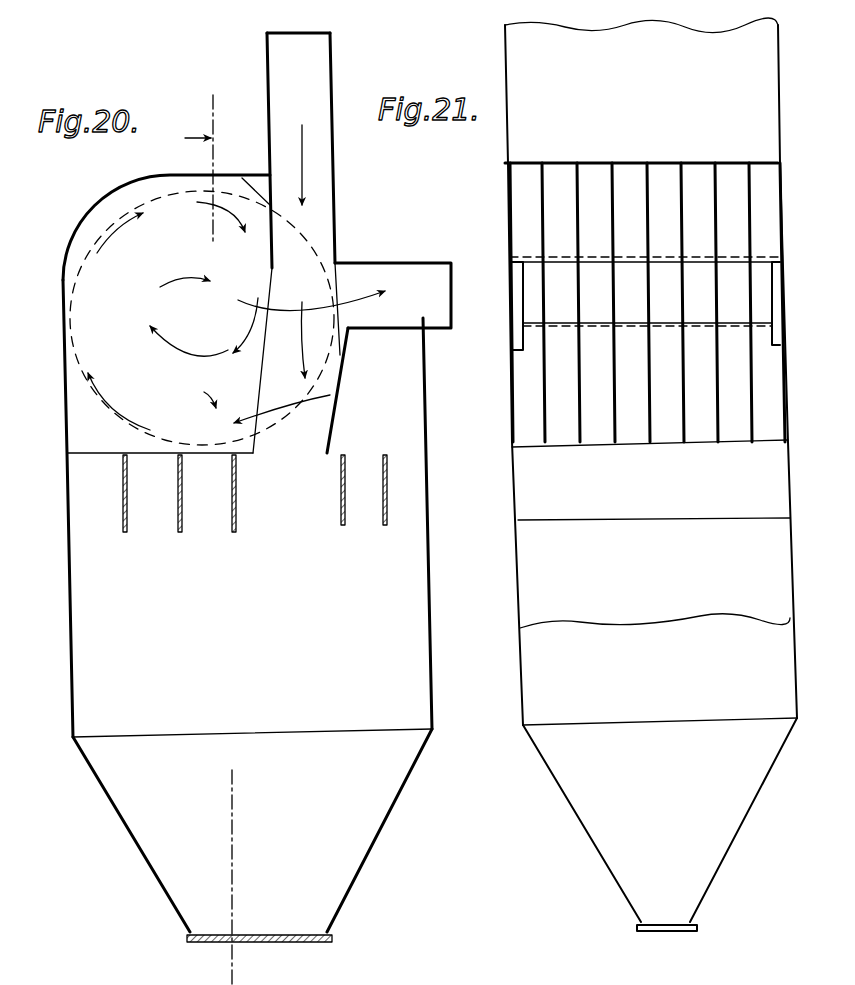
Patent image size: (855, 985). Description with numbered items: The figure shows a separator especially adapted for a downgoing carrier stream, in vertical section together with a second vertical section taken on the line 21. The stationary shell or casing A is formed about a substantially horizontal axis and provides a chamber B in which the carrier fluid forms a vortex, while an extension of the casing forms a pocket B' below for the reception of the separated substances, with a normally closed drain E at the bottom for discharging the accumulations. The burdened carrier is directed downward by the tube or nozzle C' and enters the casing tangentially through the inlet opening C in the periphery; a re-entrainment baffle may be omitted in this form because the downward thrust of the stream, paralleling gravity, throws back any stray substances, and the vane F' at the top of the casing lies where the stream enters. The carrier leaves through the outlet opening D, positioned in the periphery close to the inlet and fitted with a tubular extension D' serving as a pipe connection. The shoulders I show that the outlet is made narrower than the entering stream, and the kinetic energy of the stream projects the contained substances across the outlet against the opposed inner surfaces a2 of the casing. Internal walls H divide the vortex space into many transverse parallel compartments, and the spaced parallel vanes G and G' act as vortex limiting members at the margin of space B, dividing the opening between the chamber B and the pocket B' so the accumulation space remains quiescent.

In FIG. 20, the section line 21 is at (214, 534).
In FIG. 20, the shell or casing A is at (70, 572).
In FIG. 21, the shell or casing A is at (514, 404).
In FIG. 20, the chamber or container B is at (226, 322).
In FIG. 21, the chamber or container B is at (669, 365).
In FIG. 20, the pocket B' is at (250, 555).
In FIG. 21, the pocket B' is at (655, 611).
In FIG. 20, the inlet opening C is at (341, 239).
In FIG. 20, the tube or nozzle C' is at (320, 194).
In FIG. 21, the tube or nozzle C' is at (641, 94).
In FIG. 20, the outlet opening D is at (389, 358).
In FIG. 21, the outlet opening D is at (625, 291).
In FIG. 20, the tubular extension D' is at (433, 247).
In FIG. 20, the drain or opening E is at (308, 934).
In FIG. 20, the guide vane F' is at (273, 211).
In FIG. 21, the guide vane F' is at (664, 305).
In FIG. 20, the vortex limiting members G is at (179, 493).
In FIG. 21, the vortex limiting members G is at (654, 494).
In FIG. 20, the vortex limiting member G' is at (380, 490).
In FIG. 20, the internal walls H is at (203, 390).
In FIG. 21, the internal walls H is at (652, 367).
In FIG. 20, the shoulders I is at (334, 297).
In FIG. 21, the shoulders I is at (775, 282).
In FIG. 20, the inner surfaces a2 is at (318, 403).